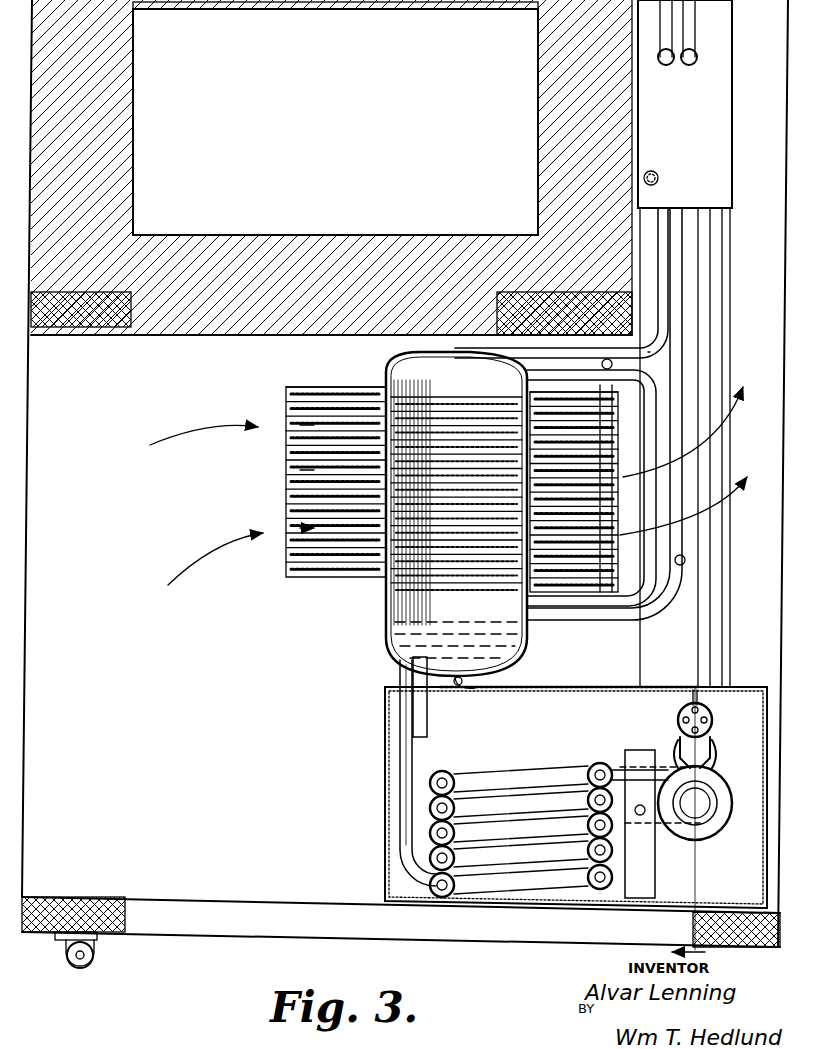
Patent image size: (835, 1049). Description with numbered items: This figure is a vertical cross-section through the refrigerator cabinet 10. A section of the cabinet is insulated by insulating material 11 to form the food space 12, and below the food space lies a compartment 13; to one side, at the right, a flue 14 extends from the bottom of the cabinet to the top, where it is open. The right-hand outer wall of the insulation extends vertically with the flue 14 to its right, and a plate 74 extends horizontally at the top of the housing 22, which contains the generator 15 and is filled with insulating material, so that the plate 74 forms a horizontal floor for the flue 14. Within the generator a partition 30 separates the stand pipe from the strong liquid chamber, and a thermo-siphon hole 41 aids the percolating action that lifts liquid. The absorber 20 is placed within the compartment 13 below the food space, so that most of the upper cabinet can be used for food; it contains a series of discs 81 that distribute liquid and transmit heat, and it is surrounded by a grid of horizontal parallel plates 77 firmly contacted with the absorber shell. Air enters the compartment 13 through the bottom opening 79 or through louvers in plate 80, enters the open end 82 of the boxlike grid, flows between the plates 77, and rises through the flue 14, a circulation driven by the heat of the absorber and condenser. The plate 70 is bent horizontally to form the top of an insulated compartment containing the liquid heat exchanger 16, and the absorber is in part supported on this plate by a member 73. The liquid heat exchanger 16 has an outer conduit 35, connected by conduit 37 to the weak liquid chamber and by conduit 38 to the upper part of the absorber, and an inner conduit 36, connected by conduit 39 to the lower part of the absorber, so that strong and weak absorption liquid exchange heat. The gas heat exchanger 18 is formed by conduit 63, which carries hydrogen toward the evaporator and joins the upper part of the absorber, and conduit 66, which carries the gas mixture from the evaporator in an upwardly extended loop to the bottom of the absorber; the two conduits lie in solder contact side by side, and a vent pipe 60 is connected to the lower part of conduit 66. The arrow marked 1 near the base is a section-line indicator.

The section line 1 is at (687, 820).
The refrigerator cabinet 10 is at (22, 890).
The insulating material 11 is at (132, 76).
The food space 12 is at (335, 46).
The compartment 13 is at (206, 525).
The flue 14 is at (693, 461).
The generator 15 is at (725, 818).
The liquid heat exchanger 16 is at (553, 776).
The gas heat exchanger 18 is at (690, 34).
The absorber 20 is at (385, 617).
The housing 22 is at (712, 736).
The partition 30 is at (713, 724).
The outer conduit 35 is at (485, 778).
The inner conduit 36 is at (445, 770).
The conduit 37 is at (622, 760).
The conduit 38 is at (400, 772).
The conduit 39 is at (413, 733).
The thermo-siphon hole 41 is at (718, 764).
The vent pipe 60 is at (706, 284).
The conduit 63 is at (661, 38).
The conduit 66 is at (670, 410).
The plate 70 is at (570, 690).
The member 73 is at (470, 680).
The plate 74 is at (778, 687).
The plates 77 is at (300, 455).
The bottom opening 79 is at (401, 922).
The plate 80 is at (30, 636).
The discs 81 is at (400, 600).
The open end of grid 82 is at (285, 412).